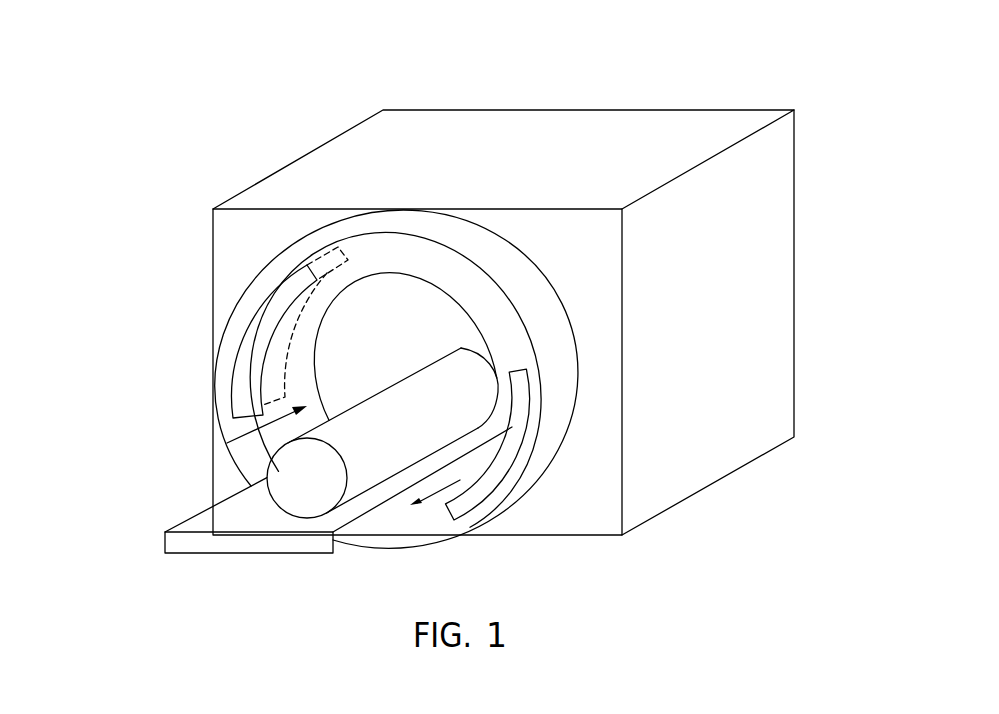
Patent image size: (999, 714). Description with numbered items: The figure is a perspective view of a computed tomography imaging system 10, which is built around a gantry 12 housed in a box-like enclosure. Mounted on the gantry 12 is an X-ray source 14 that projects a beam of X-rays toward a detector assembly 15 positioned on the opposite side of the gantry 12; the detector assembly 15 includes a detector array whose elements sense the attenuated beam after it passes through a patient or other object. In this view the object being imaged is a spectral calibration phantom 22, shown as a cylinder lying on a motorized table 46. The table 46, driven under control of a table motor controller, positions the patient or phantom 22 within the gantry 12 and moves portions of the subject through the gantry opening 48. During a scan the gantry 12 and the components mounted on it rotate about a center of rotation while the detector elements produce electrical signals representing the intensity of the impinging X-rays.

The CT imaging system 10 is at (864, 87).
The gantry 12 is at (705, 125).
The X-ray source 14 is at (257, 332).
The detector assembly 15 is at (485, 488).
The spectral calibration phantom 22 is at (362, 467).
The motorized table 46 is at (203, 522).
The gantry opening 48 is at (227, 443).